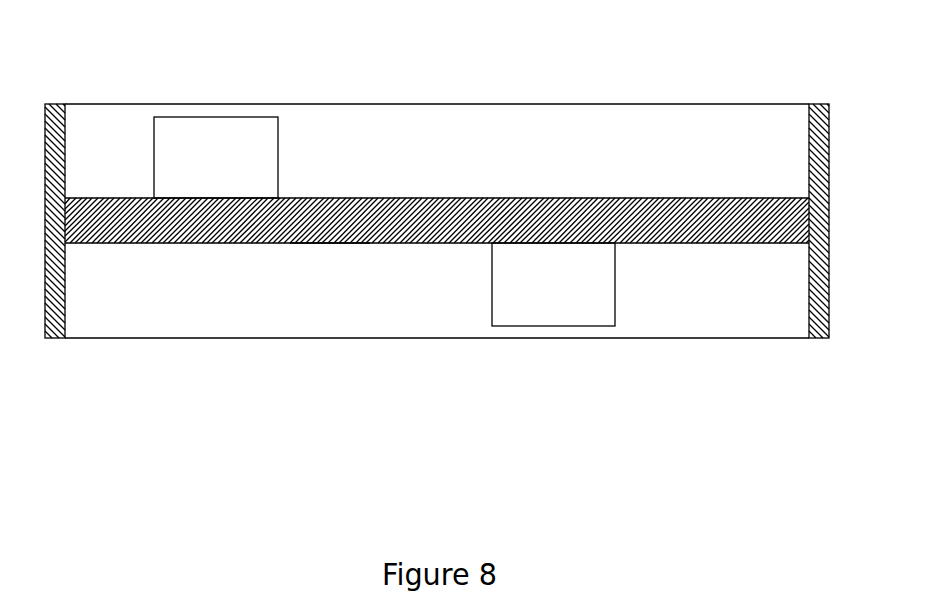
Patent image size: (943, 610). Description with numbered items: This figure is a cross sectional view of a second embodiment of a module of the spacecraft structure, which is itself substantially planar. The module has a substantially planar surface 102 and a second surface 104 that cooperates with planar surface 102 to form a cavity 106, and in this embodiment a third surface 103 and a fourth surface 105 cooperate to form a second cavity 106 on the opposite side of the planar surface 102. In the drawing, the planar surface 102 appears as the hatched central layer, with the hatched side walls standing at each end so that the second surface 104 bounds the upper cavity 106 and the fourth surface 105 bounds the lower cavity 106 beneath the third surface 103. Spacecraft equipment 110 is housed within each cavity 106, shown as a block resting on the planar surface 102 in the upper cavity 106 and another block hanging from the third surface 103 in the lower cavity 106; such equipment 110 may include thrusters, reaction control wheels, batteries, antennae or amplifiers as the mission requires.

The substantially planar surface 102 is at (548, 198).
The third surface 103 is at (328, 243).
The second surface 104 is at (63, 130).
The fourth surface 105 is at (65, 303).
The cavity 106 is at (378, 172).
The spacecraft equipment 110 is at (208, 117).